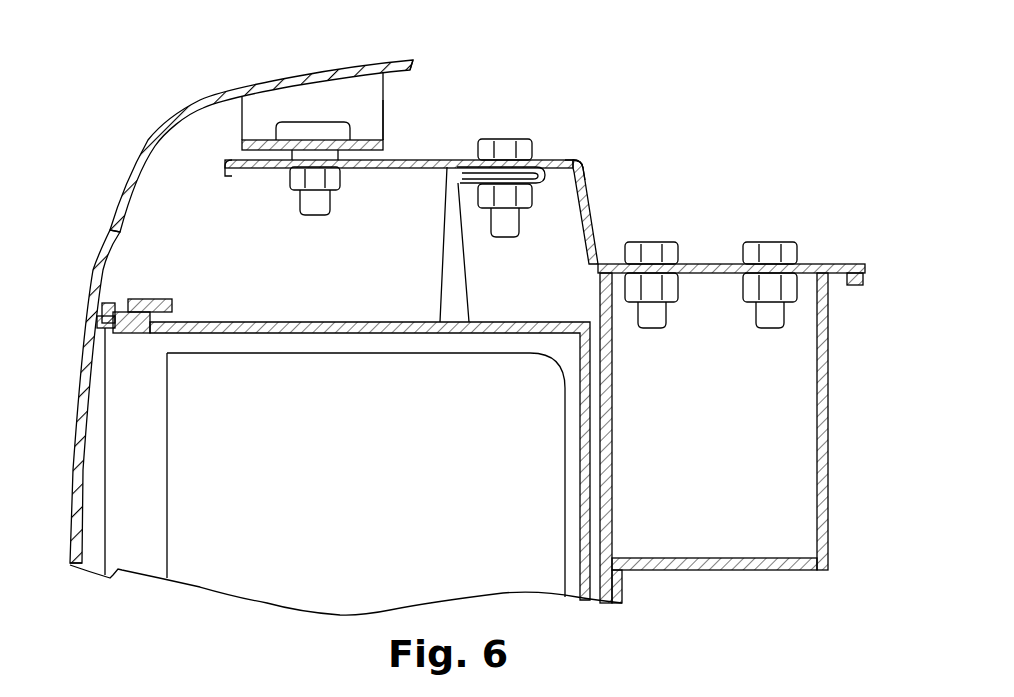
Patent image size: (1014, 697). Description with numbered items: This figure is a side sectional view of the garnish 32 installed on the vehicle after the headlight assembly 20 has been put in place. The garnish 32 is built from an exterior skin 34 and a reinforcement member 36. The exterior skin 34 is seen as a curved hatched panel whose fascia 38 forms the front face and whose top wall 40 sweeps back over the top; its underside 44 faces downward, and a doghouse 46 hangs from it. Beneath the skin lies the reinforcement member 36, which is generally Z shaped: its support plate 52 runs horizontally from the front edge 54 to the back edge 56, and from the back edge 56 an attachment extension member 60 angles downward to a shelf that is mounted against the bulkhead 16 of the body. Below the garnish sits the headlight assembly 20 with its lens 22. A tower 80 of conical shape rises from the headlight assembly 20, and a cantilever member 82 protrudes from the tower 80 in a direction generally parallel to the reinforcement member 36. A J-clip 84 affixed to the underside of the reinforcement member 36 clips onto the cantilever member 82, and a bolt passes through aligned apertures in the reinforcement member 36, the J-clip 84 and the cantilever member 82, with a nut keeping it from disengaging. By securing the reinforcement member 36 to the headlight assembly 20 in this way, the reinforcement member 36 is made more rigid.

The bulkhead 16 is at (607, 597).
The headlight assembly 20 is at (587, 583).
The lens 22 is at (72, 548).
The garnish 32 is at (147, 84).
The exterior skin 34 is at (133, 175).
The reinforcement member 36 is at (541, 160).
The fascia 38 is at (113, 222).
The top wall 40 is at (365, 76).
The underside 44 is at (425, 90).
The doghouse 46 is at (410, 120).
The support plate 52 is at (438, 160).
The front edge 54 is at (227, 192).
The back edge 56 is at (588, 150).
The attachment extension member 60 is at (585, 185).
The tower 80 is at (447, 265).
The cantilever member 82 is at (480, 173).
The J-clip 84 is at (548, 178).